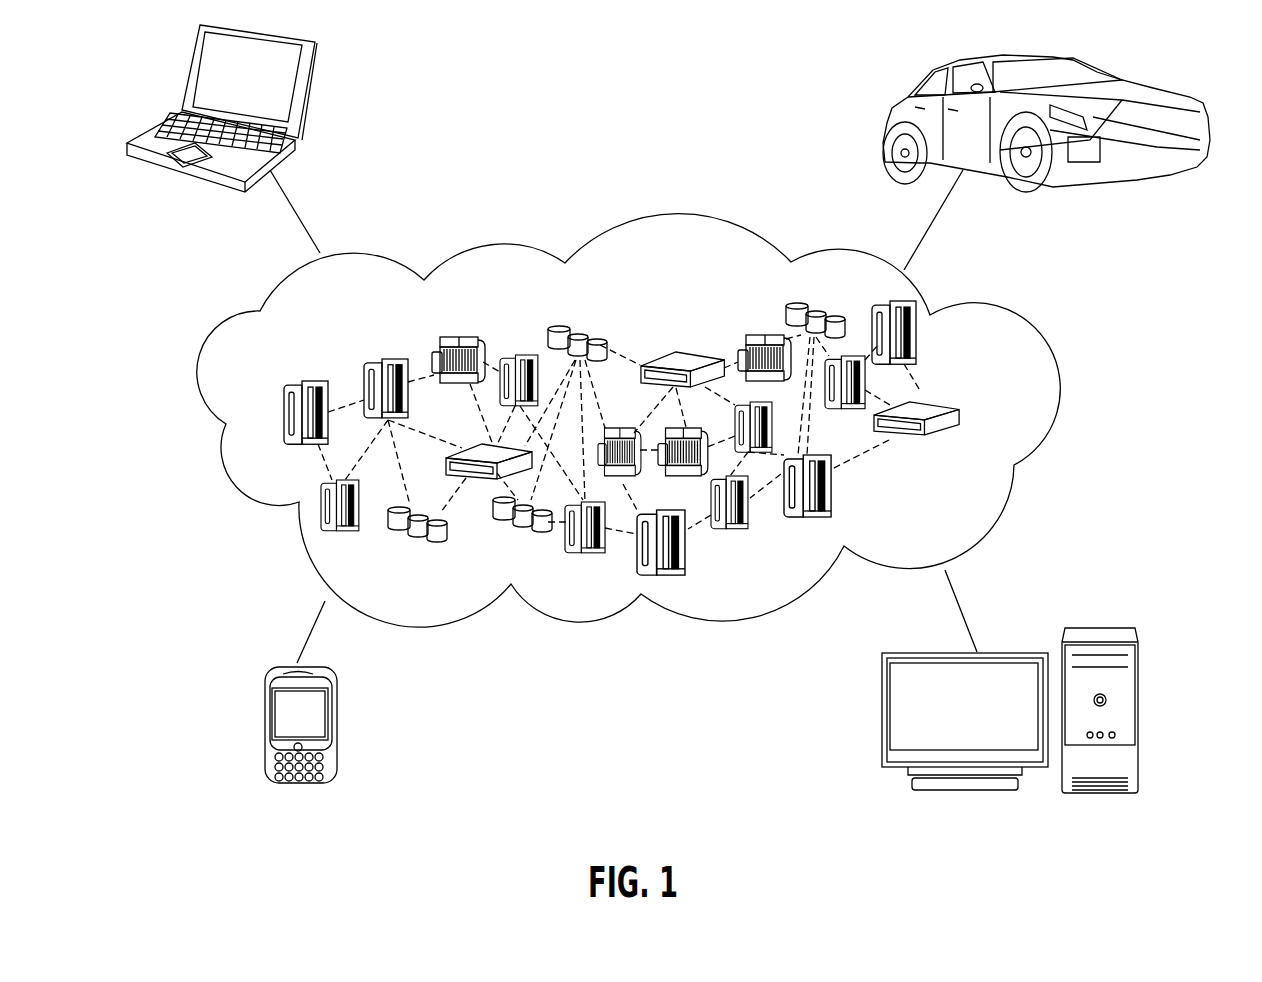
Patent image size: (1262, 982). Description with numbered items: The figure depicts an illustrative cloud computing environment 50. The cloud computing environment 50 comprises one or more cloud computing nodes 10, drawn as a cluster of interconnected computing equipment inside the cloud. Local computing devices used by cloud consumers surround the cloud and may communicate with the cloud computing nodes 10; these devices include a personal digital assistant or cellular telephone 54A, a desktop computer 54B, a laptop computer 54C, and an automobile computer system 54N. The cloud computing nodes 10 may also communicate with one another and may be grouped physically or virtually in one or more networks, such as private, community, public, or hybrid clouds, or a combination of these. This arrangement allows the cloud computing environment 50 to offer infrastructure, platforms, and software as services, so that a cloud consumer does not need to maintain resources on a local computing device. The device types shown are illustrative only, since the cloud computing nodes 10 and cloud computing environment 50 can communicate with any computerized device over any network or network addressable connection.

The cloud computing nodes 10 is at (997, 412).
The cloud computing environment 50 is at (1024, 328).
The personal digital assistant or cellular telephone 54A is at (267, 728).
The desktop computer 54B is at (1103, 627).
The laptop computer 54C is at (307, 90).
The automobile computer system 54N is at (892, 102).